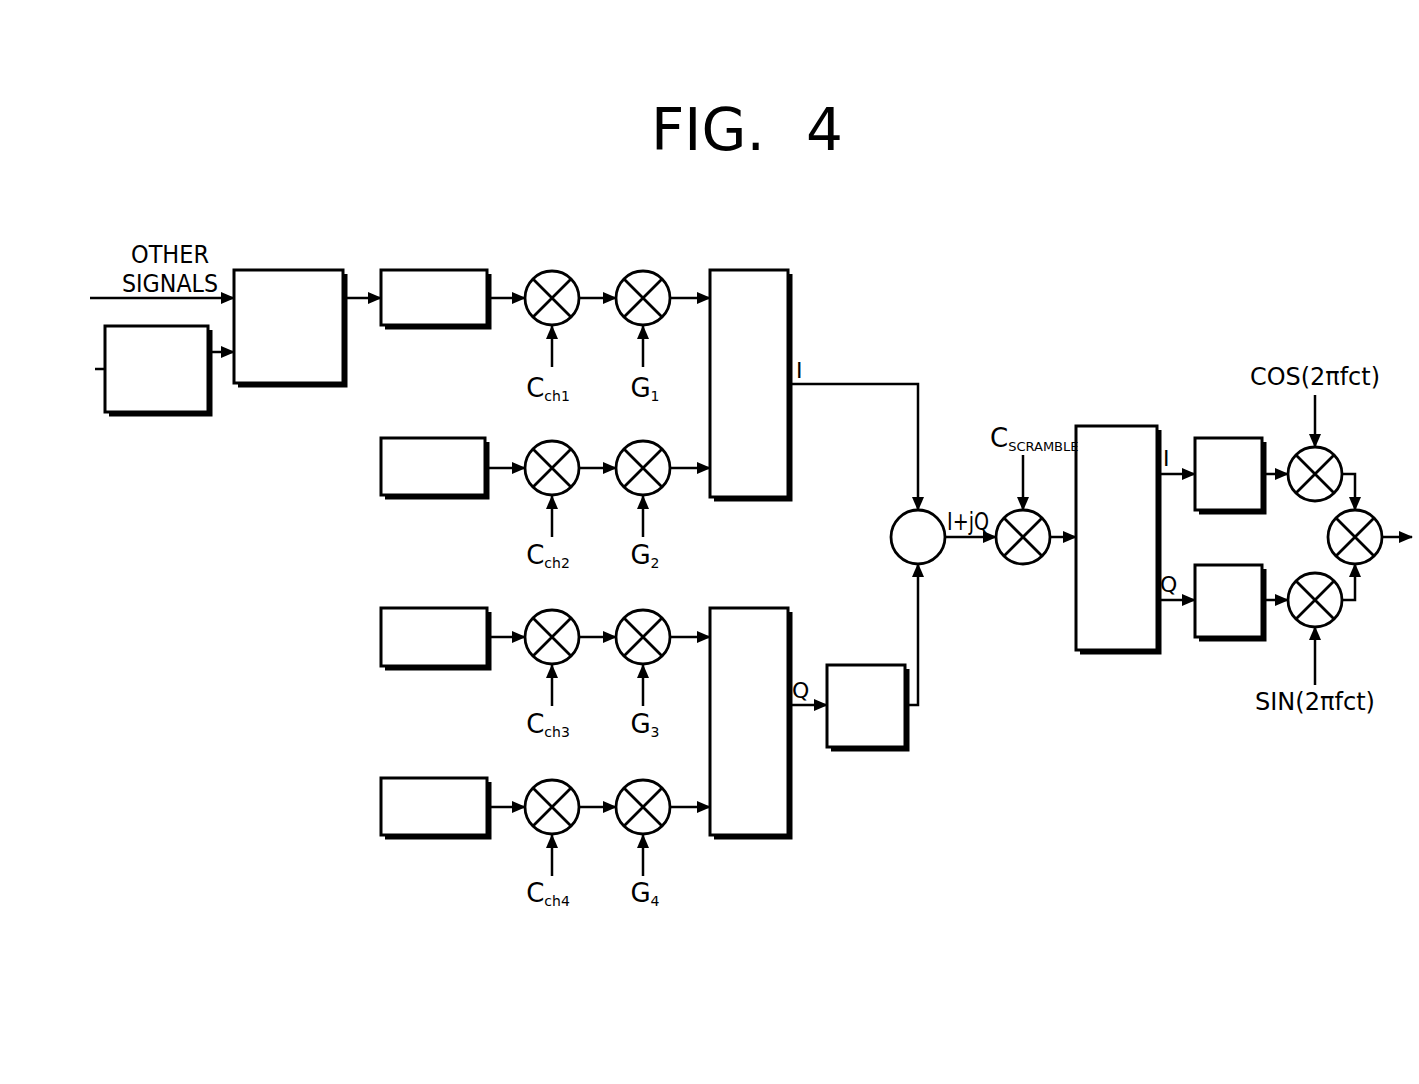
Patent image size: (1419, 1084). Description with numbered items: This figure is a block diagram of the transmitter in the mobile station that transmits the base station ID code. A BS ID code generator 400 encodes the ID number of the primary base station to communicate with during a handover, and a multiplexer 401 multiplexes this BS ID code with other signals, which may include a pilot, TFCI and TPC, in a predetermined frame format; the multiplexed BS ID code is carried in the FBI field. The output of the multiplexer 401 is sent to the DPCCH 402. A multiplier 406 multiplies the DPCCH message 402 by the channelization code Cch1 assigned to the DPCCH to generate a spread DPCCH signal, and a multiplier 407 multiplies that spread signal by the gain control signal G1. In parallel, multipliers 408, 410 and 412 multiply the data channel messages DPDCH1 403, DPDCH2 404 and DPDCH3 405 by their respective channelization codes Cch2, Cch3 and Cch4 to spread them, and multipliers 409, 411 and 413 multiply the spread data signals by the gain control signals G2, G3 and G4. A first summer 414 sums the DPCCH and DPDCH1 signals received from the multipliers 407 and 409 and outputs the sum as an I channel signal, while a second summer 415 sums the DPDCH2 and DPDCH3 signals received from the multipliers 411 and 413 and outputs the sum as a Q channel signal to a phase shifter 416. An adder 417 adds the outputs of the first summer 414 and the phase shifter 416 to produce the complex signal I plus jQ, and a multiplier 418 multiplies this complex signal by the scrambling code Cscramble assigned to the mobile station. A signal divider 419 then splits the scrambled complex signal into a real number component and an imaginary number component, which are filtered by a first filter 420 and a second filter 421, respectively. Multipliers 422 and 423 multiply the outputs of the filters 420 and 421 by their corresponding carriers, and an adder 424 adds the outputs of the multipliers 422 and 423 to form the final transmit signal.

The BS ID code generator 400 is at (156, 414).
The multiplexer 401 is at (290, 270).
The DPCCH 402 is at (433, 270).
The DPDCH1 403 is at (433, 438).
The DPDCH2 404 is at (433, 608).
The DPDCH3 405 is at (433, 778).
The multiplier 406 is at (556, 271).
The multiplier 407 is at (646, 271).
The multiplier 408 is at (569, 448).
The multiplier 409 is at (660, 448).
The multiplier 410 is at (569, 617).
The multiplier 411 is at (660, 617).
The multiplier 412 is at (569, 787).
The multiplier 413 is at (660, 787).
The first summer 414 is at (748, 270).
The second summer 415 is at (752, 840).
The phase shifter 416 is at (867, 665).
The adder 417 is at (904, 519).
The multiplier 418 is at (1007, 519).
The signal divider 419 is at (1117, 426).
The first filter 420 is at (1230, 438).
The second filter 421 is at (1230, 640).
The multiplier 422 is at (1302, 456).
The multiplier 423 is at (1300, 580).
The adder 424 is at (1370, 516).